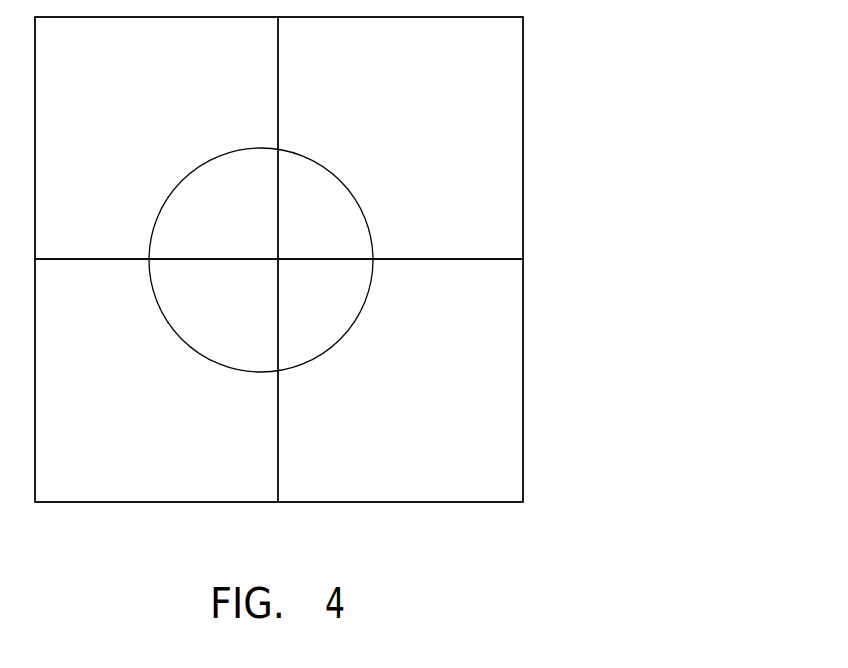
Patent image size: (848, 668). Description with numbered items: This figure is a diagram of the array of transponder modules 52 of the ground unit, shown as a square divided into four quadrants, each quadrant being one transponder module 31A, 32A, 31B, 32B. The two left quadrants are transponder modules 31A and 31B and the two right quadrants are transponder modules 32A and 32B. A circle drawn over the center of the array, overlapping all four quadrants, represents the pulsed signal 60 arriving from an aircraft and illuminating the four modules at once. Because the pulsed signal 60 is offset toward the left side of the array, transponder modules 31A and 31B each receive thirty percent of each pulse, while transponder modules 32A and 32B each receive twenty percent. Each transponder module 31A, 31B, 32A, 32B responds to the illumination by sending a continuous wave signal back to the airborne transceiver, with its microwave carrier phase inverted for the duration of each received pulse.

The array of transponder modules 52 is at (565, 390).
The transponder module 31A is at (115, 76).
The transponder module 32A is at (498, 76).
The transponder module 31B is at (115, 486).
The transponder module 32B is at (498, 486).
The pulsed signal 60 is at (218, 340).